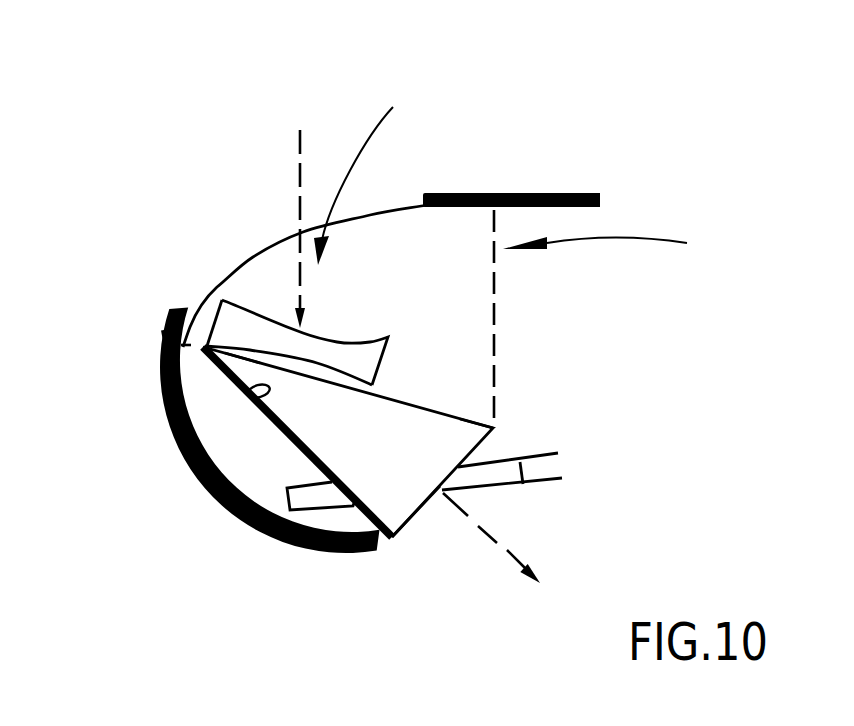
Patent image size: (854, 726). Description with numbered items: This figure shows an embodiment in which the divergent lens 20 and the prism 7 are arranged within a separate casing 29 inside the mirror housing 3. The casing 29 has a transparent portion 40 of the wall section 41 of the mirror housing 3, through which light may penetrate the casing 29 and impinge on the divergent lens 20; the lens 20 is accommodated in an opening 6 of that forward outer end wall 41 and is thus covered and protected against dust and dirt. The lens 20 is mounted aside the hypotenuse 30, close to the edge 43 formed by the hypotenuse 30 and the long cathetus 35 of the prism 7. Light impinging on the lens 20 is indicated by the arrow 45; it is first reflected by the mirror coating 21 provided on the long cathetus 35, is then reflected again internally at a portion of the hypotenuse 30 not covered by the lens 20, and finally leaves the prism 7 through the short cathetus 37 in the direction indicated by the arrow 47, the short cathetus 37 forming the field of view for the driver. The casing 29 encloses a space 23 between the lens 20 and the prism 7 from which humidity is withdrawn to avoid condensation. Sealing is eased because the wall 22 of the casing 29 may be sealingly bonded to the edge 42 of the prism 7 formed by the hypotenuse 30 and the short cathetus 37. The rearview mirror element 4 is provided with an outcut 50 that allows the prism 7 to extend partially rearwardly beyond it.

The mirror housing 3 is at (568, 192).
The rearview mirror element 4 is at (548, 468).
The opening 6 is at (362, 171).
The prism 7 is at (390, 497).
The divergent lens 20 is at (385, 353).
The mirror coating 21 is at (288, 434).
The wall of casing 22 is at (199, 343).
The space 23 is at (347, 267).
The casing 29 is at (616, 251).
The hypotenuse 30 is at (423, 407).
The long cathetus 35 is at (250, 393).
The short cathetus 37 is at (411, 518).
The transparent portion 40 is at (391, 210).
The wall section 41 is at (602, 200).
The edge 42 is at (494, 428).
The edge 43 is at (241, 359).
The arrow 45 is at (298, 140).
The arrow 47 is at (493, 543).
The outcut 50 is at (508, 472).